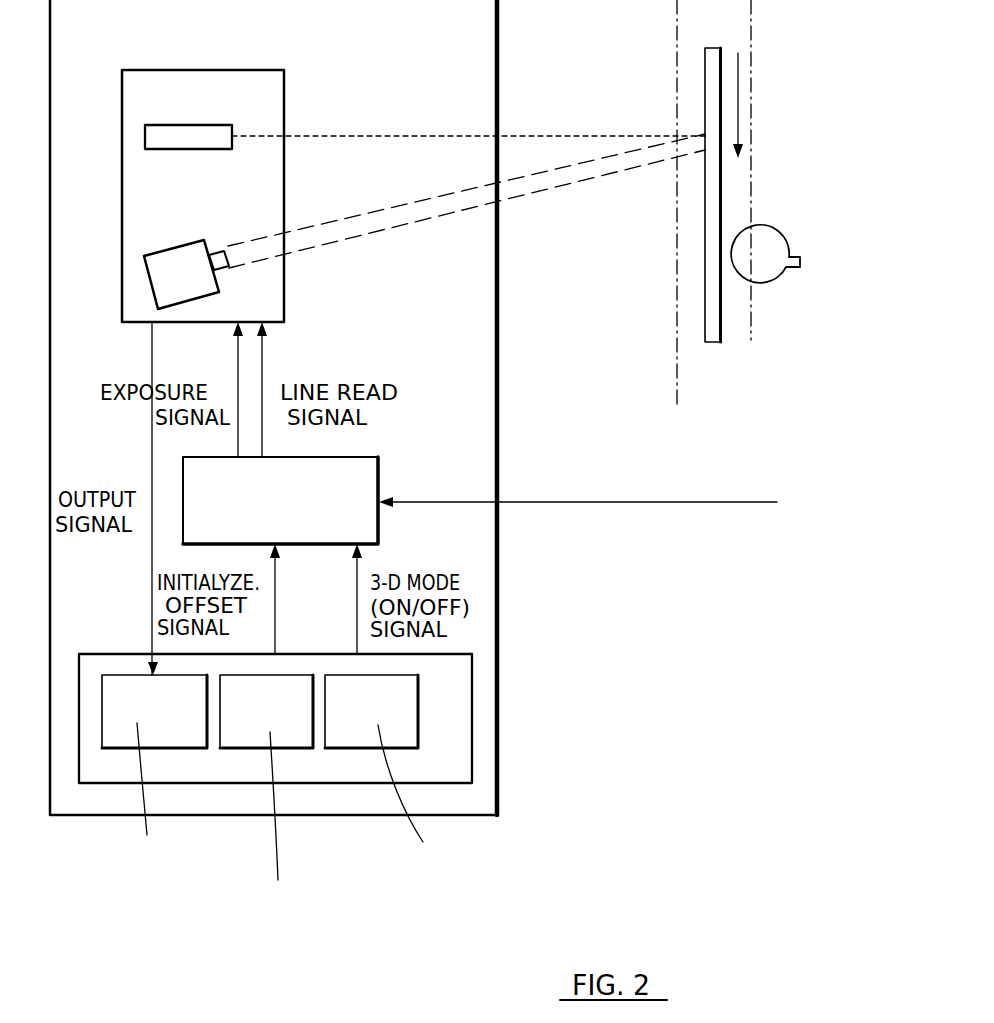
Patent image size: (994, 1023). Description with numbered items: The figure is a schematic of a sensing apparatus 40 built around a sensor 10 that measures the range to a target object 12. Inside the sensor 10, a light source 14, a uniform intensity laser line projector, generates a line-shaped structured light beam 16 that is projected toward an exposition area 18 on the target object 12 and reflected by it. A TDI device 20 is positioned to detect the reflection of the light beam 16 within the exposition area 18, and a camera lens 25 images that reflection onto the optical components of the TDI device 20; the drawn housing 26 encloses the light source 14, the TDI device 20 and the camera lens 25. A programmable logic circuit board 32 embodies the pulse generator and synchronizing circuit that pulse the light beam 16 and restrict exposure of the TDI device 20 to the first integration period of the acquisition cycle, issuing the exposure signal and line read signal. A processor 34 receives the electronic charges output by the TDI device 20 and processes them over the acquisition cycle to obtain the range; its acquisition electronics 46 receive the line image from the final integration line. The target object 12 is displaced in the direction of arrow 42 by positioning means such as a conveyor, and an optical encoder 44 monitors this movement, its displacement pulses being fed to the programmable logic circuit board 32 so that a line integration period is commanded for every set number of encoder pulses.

The sensor 10 is at (58, 352).
The target object 12 is at (705, 73).
The light source 14 is at (157, 135).
The light beam 16 is at (410, 135).
The exposition area 18 is at (705, 144).
The TDI device 20 is at (145, 285).
The camera lens 25 is at (215, 257).
The camera housing 26 is at (150, 325).
The programmable logic circuit board 32 is at (365, 458).
The processor 34 is at (453, 765).
The sensing apparatus 40 is at (616, 570).
The object motion direction arrow 42 is at (733, 42).
The optical encoder 44 is at (798, 270).
The acquisition electronics 46 is at (113, 690).